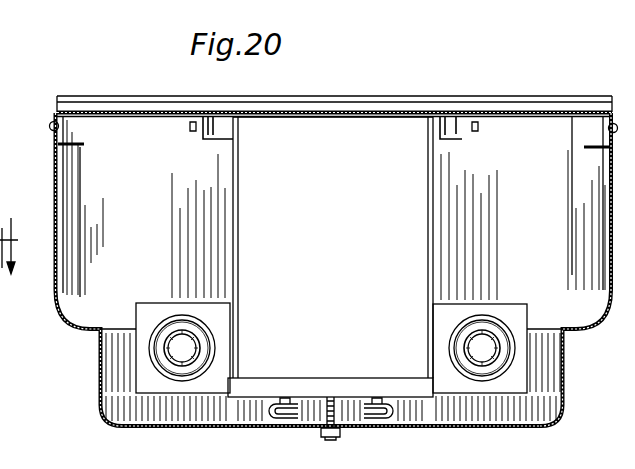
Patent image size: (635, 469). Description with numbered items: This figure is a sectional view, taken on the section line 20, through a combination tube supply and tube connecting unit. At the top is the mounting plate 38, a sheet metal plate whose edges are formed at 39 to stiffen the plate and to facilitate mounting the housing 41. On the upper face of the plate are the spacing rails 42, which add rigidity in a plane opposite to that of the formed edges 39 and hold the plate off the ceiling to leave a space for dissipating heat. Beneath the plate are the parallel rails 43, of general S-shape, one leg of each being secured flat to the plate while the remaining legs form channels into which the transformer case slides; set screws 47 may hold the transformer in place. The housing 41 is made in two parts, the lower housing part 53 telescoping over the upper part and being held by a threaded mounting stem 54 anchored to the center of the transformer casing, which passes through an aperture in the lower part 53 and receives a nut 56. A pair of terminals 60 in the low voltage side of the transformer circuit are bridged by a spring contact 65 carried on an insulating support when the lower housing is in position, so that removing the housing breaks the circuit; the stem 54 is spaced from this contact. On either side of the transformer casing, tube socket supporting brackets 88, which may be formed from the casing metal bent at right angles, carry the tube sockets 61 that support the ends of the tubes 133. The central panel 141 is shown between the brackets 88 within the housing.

The section line 20 is at (21, 246).
The mounting plate 38 is at (347, 116).
The spacing rails 42 is at (549, 103).
The housing 41 is at (53, 172).
The lower housing part 53 is at (162, 430).
The formed edges 39 is at (84, 147).
The center panel 141 is at (352, 236).
The parallel rails 43 is at (203, 141).
The set screws 47 is at (188, 123).
The tube socket supporting brackets 88 is at (152, 304).
The tube sockets 61 is at (160, 372).
The tubes 133 is at (168, 350).
The terminals 60 is at (381, 403).
The spring contact 65 is at (272, 406).
The threaded mounting stem 54 is at (335, 408).
The nut 56 is at (331, 431).